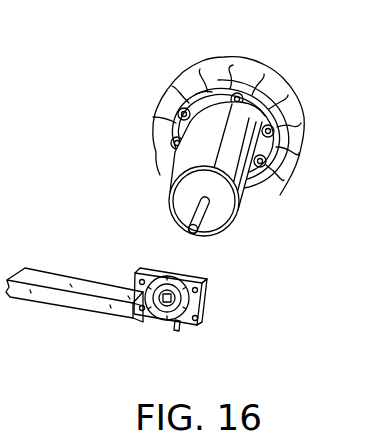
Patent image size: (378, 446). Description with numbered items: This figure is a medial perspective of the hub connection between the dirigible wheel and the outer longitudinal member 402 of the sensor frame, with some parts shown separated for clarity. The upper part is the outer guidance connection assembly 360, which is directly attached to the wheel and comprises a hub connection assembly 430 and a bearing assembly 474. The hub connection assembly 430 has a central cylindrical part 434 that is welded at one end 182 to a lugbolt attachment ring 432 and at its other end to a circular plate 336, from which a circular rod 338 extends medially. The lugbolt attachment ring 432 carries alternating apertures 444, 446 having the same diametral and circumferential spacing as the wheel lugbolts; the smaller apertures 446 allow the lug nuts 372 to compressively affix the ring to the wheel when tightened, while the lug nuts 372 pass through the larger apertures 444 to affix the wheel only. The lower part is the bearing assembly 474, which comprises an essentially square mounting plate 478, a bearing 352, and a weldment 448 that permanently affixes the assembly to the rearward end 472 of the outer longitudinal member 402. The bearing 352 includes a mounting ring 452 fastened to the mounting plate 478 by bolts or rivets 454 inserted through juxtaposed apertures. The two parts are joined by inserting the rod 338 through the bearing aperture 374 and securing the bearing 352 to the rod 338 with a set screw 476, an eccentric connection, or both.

The end 182 is at (204, 94).
The circular plate 336 is at (234, 224).
The circular rod 338 is at (184, 213).
The bearing 352 is at (197, 290).
The outer guidance connection assembly 360 is at (256, 262).
The lug nuts 372 is at (238, 92).
The bearing aperture 374 is at (197, 320).
The outer longitudinal member 402 is at (60, 300).
The hub connection assembly 430 is at (244, 198).
The lugbolt attachment ring 432 is at (306, 130).
The central cylindrical part 434 is at (172, 162).
The apertures 444 is at (241, 95).
The apertures 446 is at (178, 110).
The weldment 448 is at (135, 275).
The mounting ring 452 is at (180, 278).
The bolts or rivets 454 is at (160, 276).
The rearward end 472 is at (134, 326).
The bearing assembly 474 is at (178, 326).
The set screw 476 is at (201, 290).
The mounting plate 478 is at (157, 322).